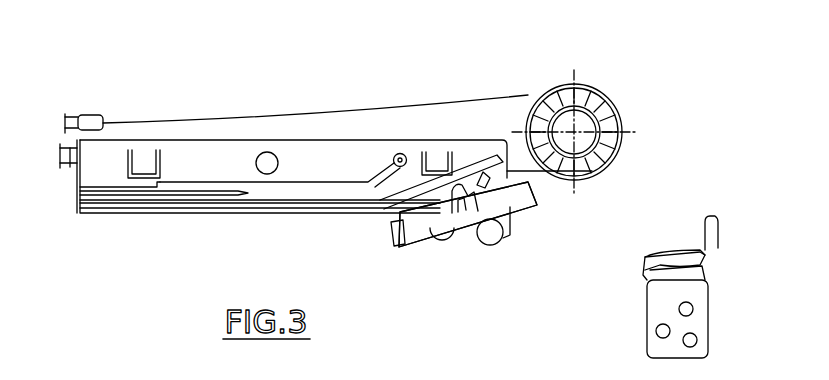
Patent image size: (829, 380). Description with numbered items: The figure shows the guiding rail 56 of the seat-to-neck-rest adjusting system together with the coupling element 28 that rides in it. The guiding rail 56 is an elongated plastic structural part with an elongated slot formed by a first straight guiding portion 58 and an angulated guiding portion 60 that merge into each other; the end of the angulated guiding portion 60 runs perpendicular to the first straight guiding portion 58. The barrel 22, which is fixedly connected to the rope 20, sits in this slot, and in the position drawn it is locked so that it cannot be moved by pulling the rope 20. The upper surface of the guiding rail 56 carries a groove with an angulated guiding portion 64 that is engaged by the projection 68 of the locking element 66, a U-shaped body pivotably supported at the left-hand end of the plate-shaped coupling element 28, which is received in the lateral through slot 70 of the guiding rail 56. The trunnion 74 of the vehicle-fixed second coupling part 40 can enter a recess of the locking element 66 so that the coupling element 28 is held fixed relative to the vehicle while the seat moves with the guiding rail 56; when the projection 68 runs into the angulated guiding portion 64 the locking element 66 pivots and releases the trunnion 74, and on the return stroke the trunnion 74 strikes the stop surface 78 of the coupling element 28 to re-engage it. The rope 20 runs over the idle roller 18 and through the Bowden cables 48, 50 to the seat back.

The idle roller 18 is at (590, 122).
The rope 20 is at (180, 118).
The barrel 22 is at (397, 153).
The coupling element 28 is at (524, 222).
The second coupling part 40 is at (714, 311).
The Bowden cable 48 is at (70, 167).
The Bowden cable 50 is at (92, 116).
The guiding rail 56 is at (230, 128).
The first straight guiding portion 58 is at (175, 195).
The angulated guiding portion 60 is at (385, 177).
The angulated straight guiding portion 64 is at (487, 172).
The locking element 66 is at (413, 258).
The projection 68 is at (468, 170).
The through slot 70 is at (200, 207).
The trunnion 74 is at (716, 228).
The stop surface 78 is at (521, 246).